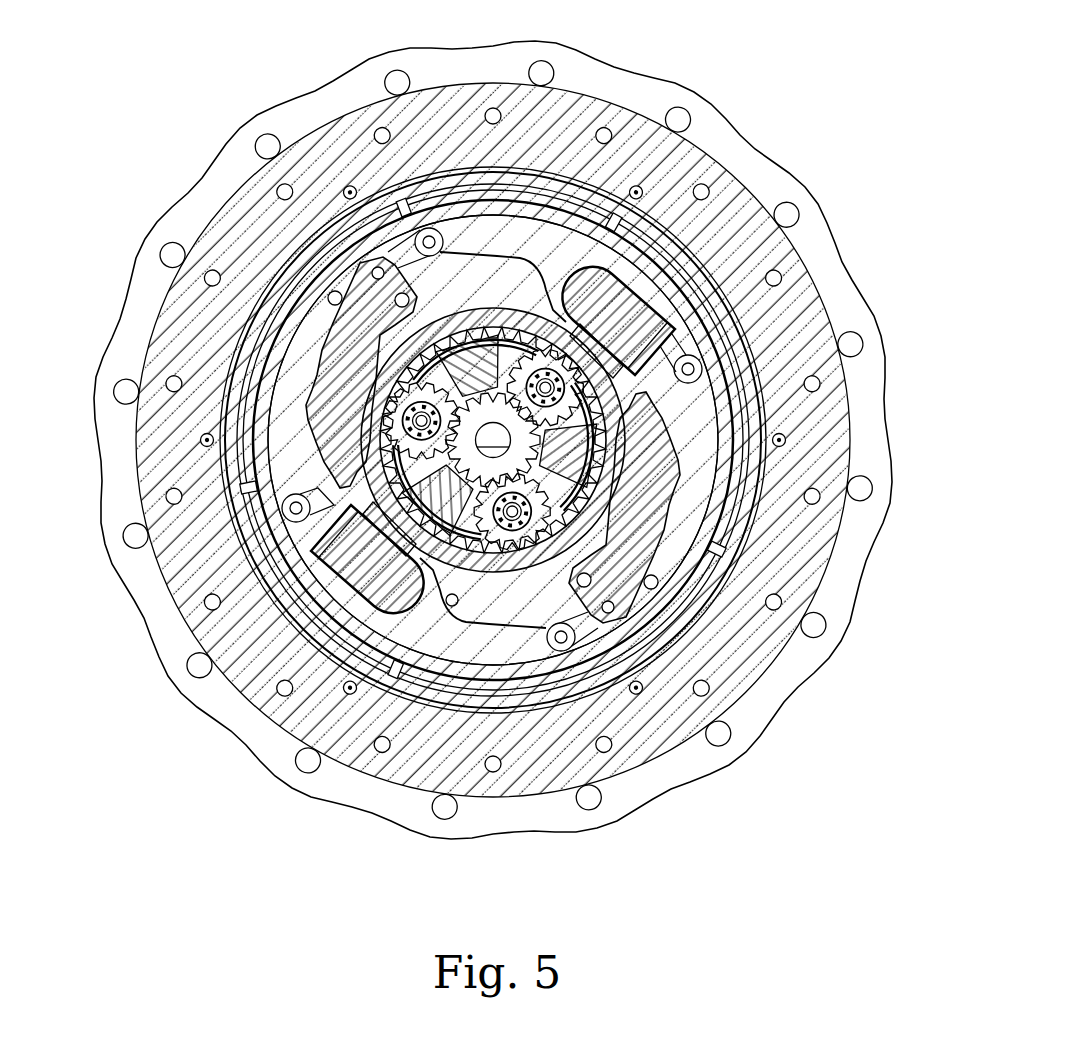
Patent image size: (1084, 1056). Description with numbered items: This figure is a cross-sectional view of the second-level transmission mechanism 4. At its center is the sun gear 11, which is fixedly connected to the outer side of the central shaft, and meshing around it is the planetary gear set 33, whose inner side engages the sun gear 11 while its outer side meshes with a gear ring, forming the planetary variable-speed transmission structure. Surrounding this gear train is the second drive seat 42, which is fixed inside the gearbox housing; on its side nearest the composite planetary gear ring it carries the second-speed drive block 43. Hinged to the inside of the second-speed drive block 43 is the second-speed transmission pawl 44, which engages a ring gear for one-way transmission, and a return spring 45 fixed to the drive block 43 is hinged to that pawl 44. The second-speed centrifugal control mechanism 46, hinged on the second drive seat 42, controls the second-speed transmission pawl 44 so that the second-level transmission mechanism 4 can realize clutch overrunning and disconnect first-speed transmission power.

The second-level transmission mechanism 4 is at (607, 402).
The sun gear 11 is at (548, 465).
The planetary gear set 33 is at (455, 607).
The second drive seat 42 is at (570, 247).
The second-speed drive block 43 is at (313, 550).
The second-speed transmission pawl 44 is at (320, 548).
The return spring 45 is at (748, 193).
The second-speed centrifugal control mechanism 46 is at (337, 343).